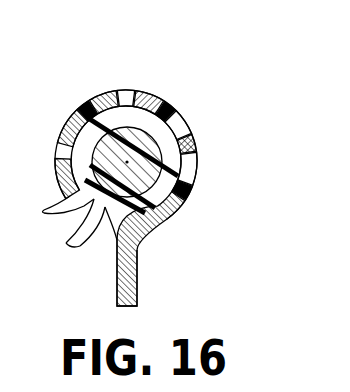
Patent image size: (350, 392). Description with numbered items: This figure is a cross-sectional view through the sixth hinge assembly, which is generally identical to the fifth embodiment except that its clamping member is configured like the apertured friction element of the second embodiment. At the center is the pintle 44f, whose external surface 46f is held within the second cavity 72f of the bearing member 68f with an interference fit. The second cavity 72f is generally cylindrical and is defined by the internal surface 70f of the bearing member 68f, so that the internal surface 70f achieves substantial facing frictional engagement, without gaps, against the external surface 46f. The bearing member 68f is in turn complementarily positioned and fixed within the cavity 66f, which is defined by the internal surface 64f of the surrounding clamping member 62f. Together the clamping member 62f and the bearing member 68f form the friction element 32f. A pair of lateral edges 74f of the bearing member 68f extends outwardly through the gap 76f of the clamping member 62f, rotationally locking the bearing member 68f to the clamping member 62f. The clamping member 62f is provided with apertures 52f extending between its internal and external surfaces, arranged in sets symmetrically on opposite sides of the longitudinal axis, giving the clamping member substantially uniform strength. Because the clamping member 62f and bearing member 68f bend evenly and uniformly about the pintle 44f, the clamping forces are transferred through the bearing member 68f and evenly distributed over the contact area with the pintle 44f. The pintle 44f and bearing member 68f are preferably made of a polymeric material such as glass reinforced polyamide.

The friction element 32f is at (140, 263).
The pintle 44f is at (60, 171).
The external surface 46f is at (100, 110).
The apertures 52f is at (67, 146).
The clamping member 62f is at (172, 110).
The internal surface 64f is at (190, 136).
The cavity 66f is at (112, 238).
The bearing member 68f is at (146, 97).
The internal surface 70f is at (118, 128).
The second cavity 72f is at (195, 190).
The lateral edges 74f is at (84, 242).
The gap 76f is at (66, 205).